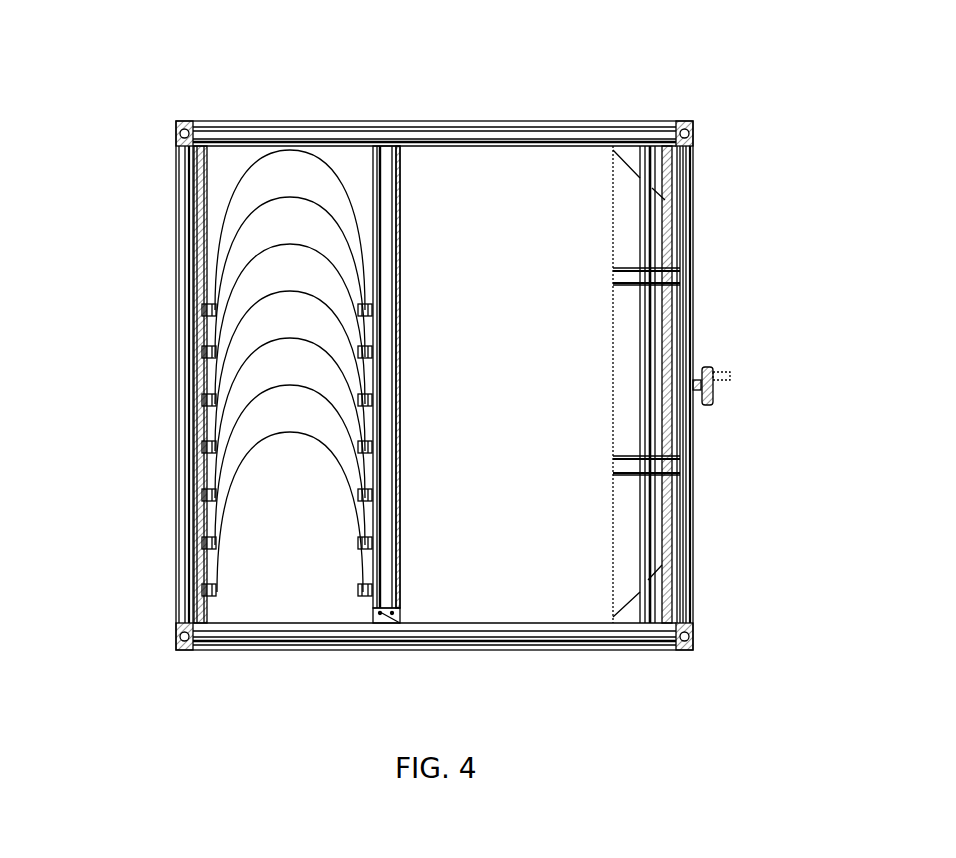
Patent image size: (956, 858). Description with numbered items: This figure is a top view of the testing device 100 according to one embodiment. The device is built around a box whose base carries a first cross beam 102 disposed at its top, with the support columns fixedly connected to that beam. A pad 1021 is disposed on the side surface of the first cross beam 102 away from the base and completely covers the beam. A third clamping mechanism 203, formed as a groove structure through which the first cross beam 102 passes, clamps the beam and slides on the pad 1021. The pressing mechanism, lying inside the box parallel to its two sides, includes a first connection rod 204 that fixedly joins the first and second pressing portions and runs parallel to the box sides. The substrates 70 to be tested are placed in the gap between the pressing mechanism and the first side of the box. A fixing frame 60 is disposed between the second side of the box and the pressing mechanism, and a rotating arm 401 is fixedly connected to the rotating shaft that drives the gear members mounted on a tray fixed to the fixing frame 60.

The testing device 100 is at (158, 96).
The substrates 70 is at (300, 180).
The fixing frame 60 is at (648, 165).
The first connection rod 204 is at (400, 421).
The rotating arm 401 is at (730, 378).
The third clamping mechanism 203 is at (380, 623).
The pad 1021 is at (522, 623).
The first cross beam 102 is at (665, 650).